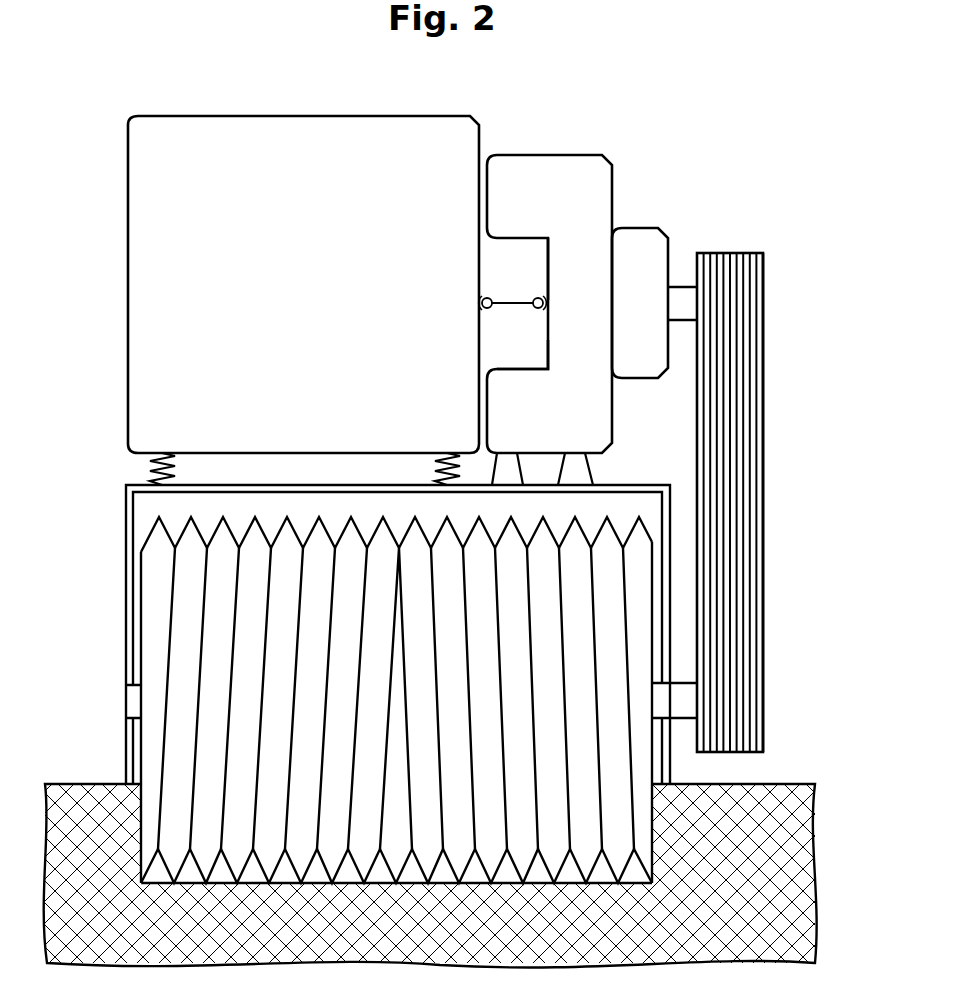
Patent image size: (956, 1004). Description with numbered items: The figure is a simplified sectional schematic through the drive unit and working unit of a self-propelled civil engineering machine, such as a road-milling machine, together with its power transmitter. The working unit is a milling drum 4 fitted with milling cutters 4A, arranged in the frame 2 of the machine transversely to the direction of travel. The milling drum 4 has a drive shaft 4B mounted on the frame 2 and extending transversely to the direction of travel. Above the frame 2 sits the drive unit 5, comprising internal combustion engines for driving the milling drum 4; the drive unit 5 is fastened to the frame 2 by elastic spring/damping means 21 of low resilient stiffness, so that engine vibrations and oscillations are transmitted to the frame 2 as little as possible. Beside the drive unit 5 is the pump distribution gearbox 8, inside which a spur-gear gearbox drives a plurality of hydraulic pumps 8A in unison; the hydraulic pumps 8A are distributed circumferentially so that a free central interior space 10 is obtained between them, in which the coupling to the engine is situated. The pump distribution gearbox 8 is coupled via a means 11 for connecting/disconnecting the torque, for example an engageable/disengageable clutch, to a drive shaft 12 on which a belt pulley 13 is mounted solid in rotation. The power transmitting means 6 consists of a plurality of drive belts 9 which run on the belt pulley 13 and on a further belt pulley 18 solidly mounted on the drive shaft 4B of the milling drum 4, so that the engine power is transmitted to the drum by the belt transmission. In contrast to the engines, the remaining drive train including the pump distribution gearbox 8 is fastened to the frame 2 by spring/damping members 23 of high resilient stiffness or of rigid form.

The frame 2 is at (127, 578).
The milling drum 4 is at (185, 632).
The milling cutters 4A is at (158, 540).
The drive shaft 4B is at (682, 712).
The drive unit 5 is at (256, 108).
The power transmitting means 6 is at (778, 381).
The pump distribution gearbox 8 is at (552, 165).
The hydraulic pumps 8A is at (515, 380).
The drive belts 9 is at (745, 453).
The free central interior space 10 is at (546, 262).
The means for connecting/disconnecting the torque 11 is at (643, 233).
The drive shaft 12 is at (684, 302).
The belt pulley 13 is at (763, 292).
The belt pulley 18 is at (765, 706).
The elastic spring/damping means 21 is at (148, 465).
The spring/damping members 23 is at (510, 470).